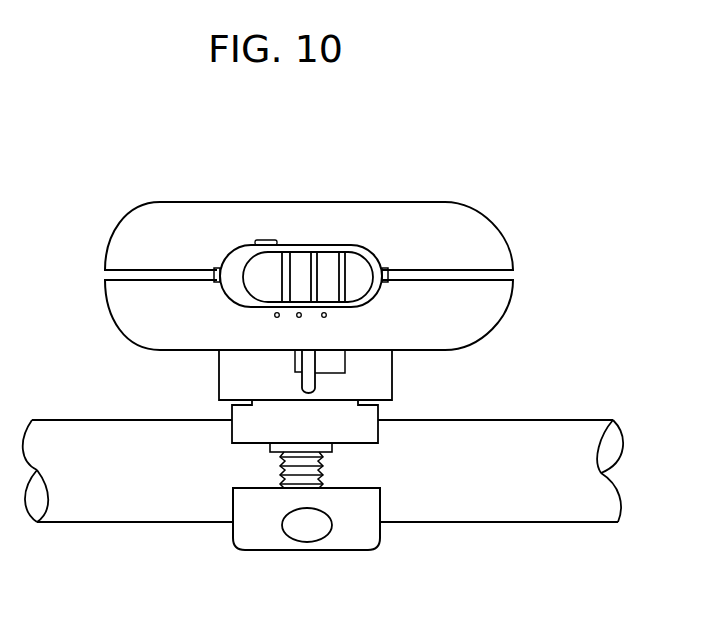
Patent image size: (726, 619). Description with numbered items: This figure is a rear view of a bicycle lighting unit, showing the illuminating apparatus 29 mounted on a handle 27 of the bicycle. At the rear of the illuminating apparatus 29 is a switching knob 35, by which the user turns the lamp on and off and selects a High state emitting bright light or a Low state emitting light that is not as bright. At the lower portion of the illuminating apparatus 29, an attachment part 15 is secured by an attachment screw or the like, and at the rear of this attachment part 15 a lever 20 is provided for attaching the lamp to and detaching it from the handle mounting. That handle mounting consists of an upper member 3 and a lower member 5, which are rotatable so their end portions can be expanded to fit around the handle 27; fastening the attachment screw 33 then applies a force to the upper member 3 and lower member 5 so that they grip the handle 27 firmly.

The illuminating apparatus 29 is at (468, 237).
The switching knob 35 is at (300, 267).
The attachment part 15 is at (242, 373).
The lever 20 is at (303, 372).
The upper member 3 is at (355, 425).
The handle 27 is at (503, 445).
The attachment screw 33 is at (282, 473).
The lower member 5 is at (360, 532).